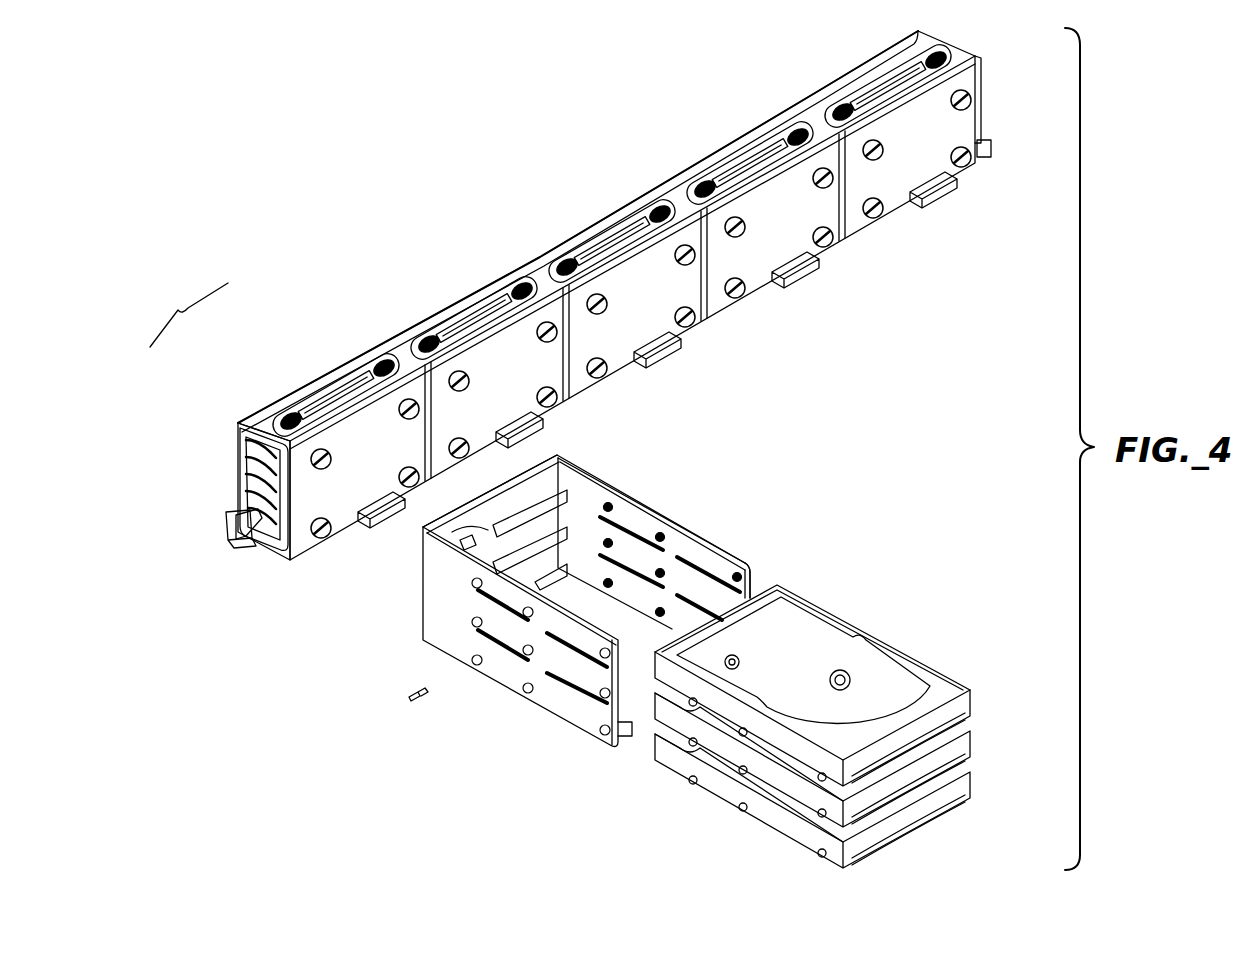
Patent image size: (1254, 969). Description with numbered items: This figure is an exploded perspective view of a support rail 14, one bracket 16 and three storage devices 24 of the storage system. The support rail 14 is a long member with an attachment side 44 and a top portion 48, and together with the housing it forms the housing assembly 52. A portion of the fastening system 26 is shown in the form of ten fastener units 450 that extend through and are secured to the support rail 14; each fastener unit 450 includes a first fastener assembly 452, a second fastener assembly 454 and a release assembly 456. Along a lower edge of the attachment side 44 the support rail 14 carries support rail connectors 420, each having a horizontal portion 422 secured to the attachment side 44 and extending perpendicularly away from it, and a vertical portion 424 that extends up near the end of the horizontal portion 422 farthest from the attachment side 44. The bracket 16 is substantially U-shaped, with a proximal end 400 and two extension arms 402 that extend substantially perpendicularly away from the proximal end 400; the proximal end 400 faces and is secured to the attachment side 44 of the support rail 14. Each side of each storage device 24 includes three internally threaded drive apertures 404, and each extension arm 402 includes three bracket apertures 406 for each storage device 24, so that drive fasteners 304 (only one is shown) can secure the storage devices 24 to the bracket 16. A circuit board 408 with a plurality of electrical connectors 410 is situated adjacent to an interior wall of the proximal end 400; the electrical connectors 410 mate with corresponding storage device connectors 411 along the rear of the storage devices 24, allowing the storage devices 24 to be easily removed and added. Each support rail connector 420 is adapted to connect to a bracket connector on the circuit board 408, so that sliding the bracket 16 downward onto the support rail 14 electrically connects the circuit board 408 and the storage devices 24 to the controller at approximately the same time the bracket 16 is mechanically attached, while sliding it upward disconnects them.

The support rail 14 is at (418, 330).
The top portion 48 is at (812, 128).
The fastener units 450 is at (345, 392).
The attachment side 44 is at (958, 115).
The housing assembly 52 is at (566, 225).
The fastening system 26 is at (220, 421).
The release assembly 456 is at (328, 402).
The first fastener assembly 452 is at (300, 412).
The second fastener assembly 454 is at (248, 505).
The circuit board 408 is at (395, 530).
The proximal end 400 is at (540, 460).
The support rail connector 420 is at (683, 362).
The horizontal portion 422 is at (805, 288).
The vertical portion 424 is at (822, 272).
The bracket 16 is at (600, 477).
The extension arms 402 is at (650, 505).
The storage device connectors 411 is at (760, 565).
The bracket apertures 406 is at (522, 686).
The electrical connectors 410 is at (497, 518).
The drive fastener 304 is at (403, 700).
The storage device 24 is at (935, 672).
The drive apertures 404 is at (740, 808).